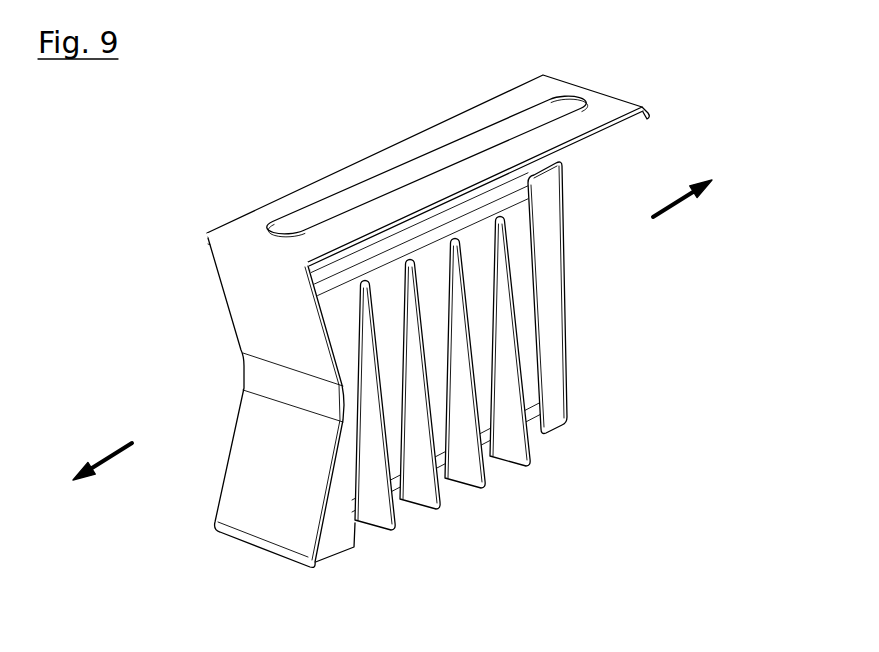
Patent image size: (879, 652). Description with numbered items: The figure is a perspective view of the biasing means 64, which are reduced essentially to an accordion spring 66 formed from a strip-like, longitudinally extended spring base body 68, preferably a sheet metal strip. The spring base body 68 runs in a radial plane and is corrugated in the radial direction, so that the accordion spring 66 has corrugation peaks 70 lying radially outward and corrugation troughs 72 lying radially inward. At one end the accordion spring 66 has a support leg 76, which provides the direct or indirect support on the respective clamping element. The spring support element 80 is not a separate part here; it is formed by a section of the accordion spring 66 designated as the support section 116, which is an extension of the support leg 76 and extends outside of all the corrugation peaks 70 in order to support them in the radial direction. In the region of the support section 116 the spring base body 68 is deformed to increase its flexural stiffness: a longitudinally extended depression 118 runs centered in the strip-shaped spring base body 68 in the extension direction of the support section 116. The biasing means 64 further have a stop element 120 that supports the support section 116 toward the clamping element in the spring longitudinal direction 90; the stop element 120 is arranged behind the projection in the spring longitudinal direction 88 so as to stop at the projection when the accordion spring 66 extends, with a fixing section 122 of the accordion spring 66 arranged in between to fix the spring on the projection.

The biasing means 64 is at (436, 329).
The accordion spring 66 is at (230, 363).
The spring base body 68 is at (381, 415).
The corrugation peaks 70 is at (416, 371).
The corrugation troughs 72 is at (421, 423).
The support leg 76 is at (287, 443).
The spring support element 80 is at (427, 140).
The support section 116 is at (393, 150).
The depression 118 is at (481, 153).
The stop element 120 is at (652, 116).
The fixing section 122 is at (563, 211).
The spring longitudinal direction 88 is at (667, 207).
The spring longitudinal direction 90 is at (115, 452).